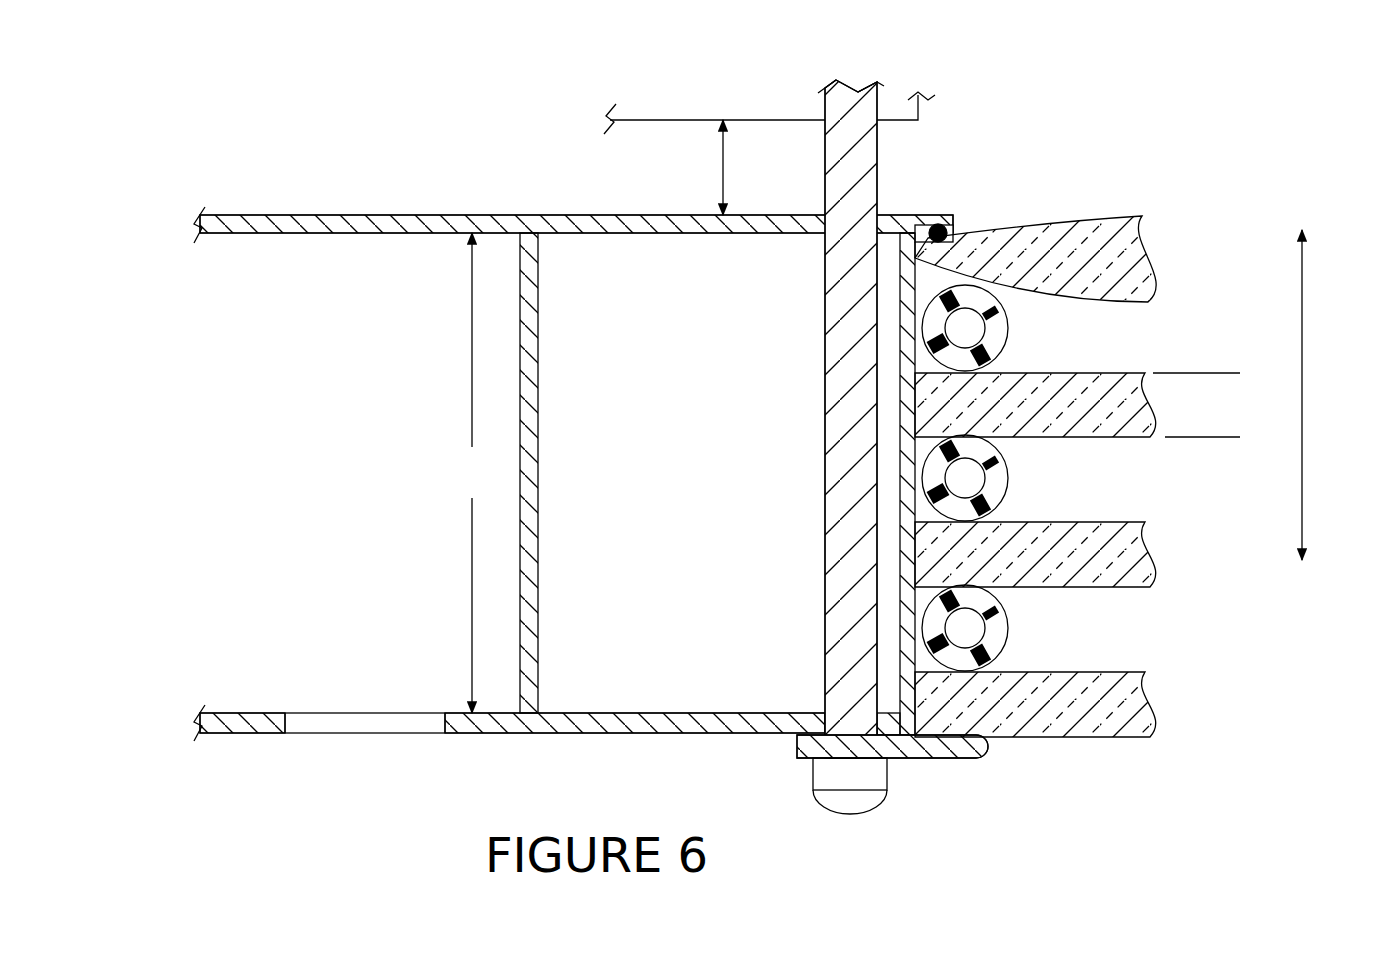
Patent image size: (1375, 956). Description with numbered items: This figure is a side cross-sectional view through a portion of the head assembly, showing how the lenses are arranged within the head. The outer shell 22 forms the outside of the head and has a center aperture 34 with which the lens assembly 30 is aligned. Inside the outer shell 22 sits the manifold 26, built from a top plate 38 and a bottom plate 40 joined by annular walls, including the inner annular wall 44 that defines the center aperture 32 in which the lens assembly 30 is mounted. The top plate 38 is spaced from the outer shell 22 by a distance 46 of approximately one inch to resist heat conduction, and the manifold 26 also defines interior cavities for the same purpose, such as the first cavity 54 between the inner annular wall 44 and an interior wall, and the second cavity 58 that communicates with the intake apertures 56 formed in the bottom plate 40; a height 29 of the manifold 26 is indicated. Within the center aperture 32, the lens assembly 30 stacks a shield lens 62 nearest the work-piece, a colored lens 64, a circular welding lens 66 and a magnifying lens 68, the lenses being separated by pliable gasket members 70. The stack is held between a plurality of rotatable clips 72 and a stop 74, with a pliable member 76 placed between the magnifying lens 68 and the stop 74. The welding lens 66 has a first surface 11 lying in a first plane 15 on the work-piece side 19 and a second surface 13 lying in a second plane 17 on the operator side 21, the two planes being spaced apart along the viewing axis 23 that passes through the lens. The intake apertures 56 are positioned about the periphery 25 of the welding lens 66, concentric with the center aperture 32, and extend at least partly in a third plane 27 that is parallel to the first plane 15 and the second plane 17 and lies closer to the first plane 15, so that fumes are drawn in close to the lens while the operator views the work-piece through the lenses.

The first surface 11 is at (1055, 437).
The second surface 13 is at (1055, 373).
The first plane 15 is at (1213, 439).
The second plane 17 is at (1213, 371).
The work-piece side 19 is at (1218, 781).
The operator side 21 is at (1212, 141).
The outer shell 22 is at (900, 112).
The viewing axis 23 is at (1303, 385).
The periphery 25 is at (912, 378).
The manifold 26 is at (200, 748).
The third plane 27 is at (148, 733).
The height of the manifold 29 is at (471, 473).
The lens assembly 30 is at (1120, 800).
The center aperture 32 is at (915, 660).
The center aperture 34 is at (925, 100).
The top plate 38 is at (397, 215).
The bottom plate 40 is at (693, 722).
The inner annular wall 44 is at (905, 315).
The distance 46 is at (721, 165).
The first cavity 54 is at (665, 496).
The intake aperture 56 is at (357, 718).
The second cavity 58 is at (320, 394).
The shield lens 62 is at (1150, 712).
The colored lens 64 is at (942, 543).
The welding lens 66 is at (930, 405).
The magnifying lens 68 is at (1125, 237).
The gasket member 70 is at (1010, 328).
The rotatable clip 72 is at (925, 760).
The stop 74 is at (940, 225).
The pliable member 76 is at (918, 262).